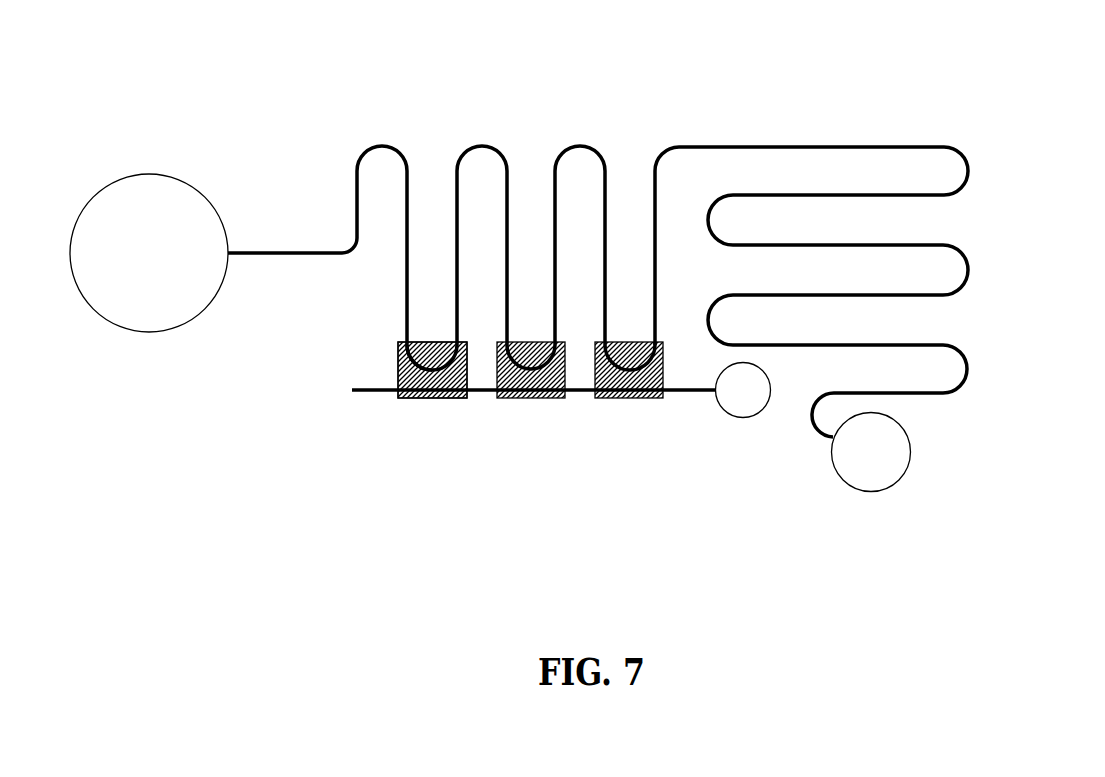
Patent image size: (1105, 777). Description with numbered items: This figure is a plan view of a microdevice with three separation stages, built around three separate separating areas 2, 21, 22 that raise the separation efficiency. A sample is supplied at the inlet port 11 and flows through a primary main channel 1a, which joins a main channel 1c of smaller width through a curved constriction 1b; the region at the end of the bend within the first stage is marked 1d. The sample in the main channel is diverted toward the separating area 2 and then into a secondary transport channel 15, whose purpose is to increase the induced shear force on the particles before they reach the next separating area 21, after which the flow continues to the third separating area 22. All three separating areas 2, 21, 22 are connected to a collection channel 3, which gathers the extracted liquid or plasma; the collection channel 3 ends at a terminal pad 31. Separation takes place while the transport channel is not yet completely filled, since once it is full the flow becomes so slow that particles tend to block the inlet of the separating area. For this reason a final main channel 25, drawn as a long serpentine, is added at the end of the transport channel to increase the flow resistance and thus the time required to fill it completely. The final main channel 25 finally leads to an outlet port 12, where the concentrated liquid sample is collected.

The inlet port 11 is at (153, 213).
The primary main channel 1a is at (362, 153).
The curved constriction 1b is at (403, 342).
The main channel 1c is at (419, 366).
The channel bend in chamber 1d is at (492, 318).
The secondary transport channel 15 is at (453, 187).
The separating area 2 is at (455, 375).
The separating area 21 is at (543, 380).
The separating area 22 is at (650, 375).
The collection channel 3 is at (362, 393).
The terminal pad 31 is at (734, 394).
The final main channel 25 is at (718, 145).
The outlet port 12 is at (897, 461).